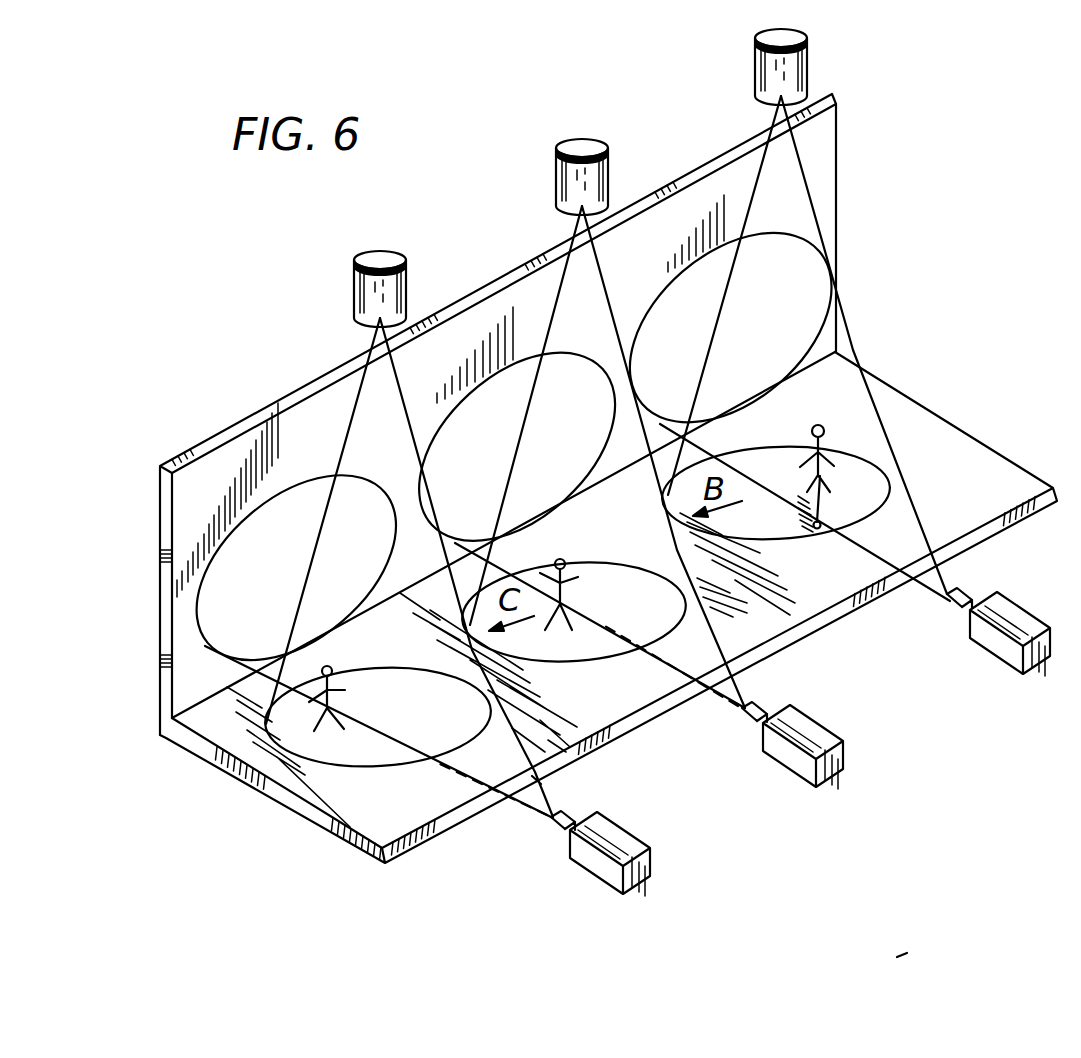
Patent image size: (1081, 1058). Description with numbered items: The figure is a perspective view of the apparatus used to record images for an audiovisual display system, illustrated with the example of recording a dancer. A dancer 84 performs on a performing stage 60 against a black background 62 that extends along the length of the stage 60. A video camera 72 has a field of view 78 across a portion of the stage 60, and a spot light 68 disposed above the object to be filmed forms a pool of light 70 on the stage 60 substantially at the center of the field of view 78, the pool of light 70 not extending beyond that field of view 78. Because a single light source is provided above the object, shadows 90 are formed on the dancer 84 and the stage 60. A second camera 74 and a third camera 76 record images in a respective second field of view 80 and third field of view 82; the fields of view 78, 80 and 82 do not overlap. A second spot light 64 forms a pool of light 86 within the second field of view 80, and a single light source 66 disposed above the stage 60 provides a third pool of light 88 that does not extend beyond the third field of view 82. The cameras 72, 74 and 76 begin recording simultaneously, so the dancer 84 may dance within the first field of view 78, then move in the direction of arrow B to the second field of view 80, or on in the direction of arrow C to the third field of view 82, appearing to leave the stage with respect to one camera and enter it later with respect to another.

The performing stage 60 is at (919, 413).
The black background 62 is at (824, 175).
The second spot light 64 is at (582, 140).
The single light source 66 is at (381, 258).
The spot light 68 is at (758, 42).
The pool of light 70 is at (740, 452).
The video camera 72 is at (1036, 663).
The second camera 74 is at (833, 773).
The third camera 76 is at (650, 870).
The field of view 78 is at (906, 522).
The second field of view 80 is at (710, 636).
The third field of view 82 is at (503, 745).
The dancer 84 is at (330, 667).
The pool of light 86 is at (648, 568).
The third pool of light 88 is at (414, 680).
The shadows 90 is at (822, 506).